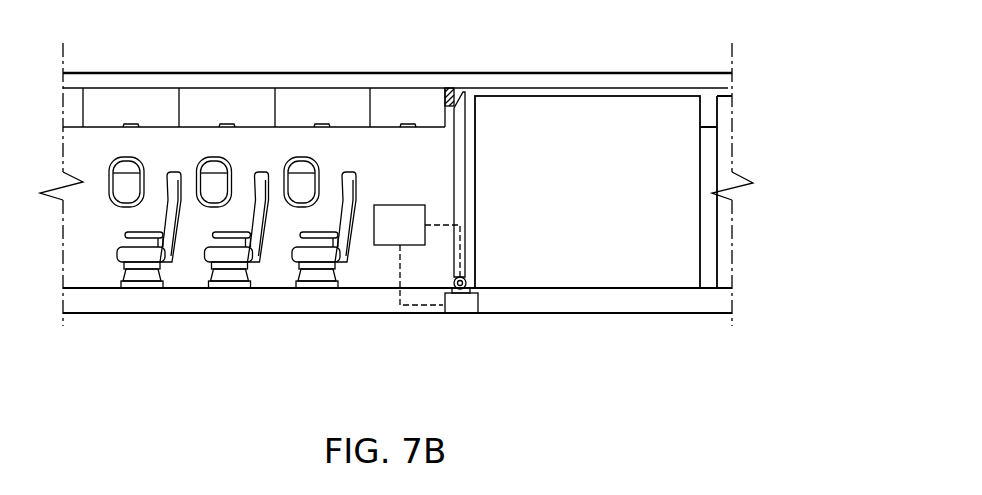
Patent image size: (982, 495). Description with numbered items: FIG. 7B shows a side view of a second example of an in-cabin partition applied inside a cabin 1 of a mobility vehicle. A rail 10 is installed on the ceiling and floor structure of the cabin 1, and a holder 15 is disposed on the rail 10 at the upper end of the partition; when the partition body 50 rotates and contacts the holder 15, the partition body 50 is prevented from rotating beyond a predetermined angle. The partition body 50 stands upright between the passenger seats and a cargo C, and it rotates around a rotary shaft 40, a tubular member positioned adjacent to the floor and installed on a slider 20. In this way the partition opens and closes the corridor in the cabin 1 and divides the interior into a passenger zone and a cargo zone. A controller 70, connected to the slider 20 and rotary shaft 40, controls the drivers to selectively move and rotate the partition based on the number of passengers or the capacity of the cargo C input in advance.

The cabin 1 is at (382, 146).
The rail 10 is at (574, 72).
The holder 15 is at (449, 88).
The partition body 50 is at (462, 117).
The controller 70 is at (387, 238).
The rotary shaft 40 is at (455, 280).
The slider 20 is at (462, 303).
The cargo C is at (630, 118).